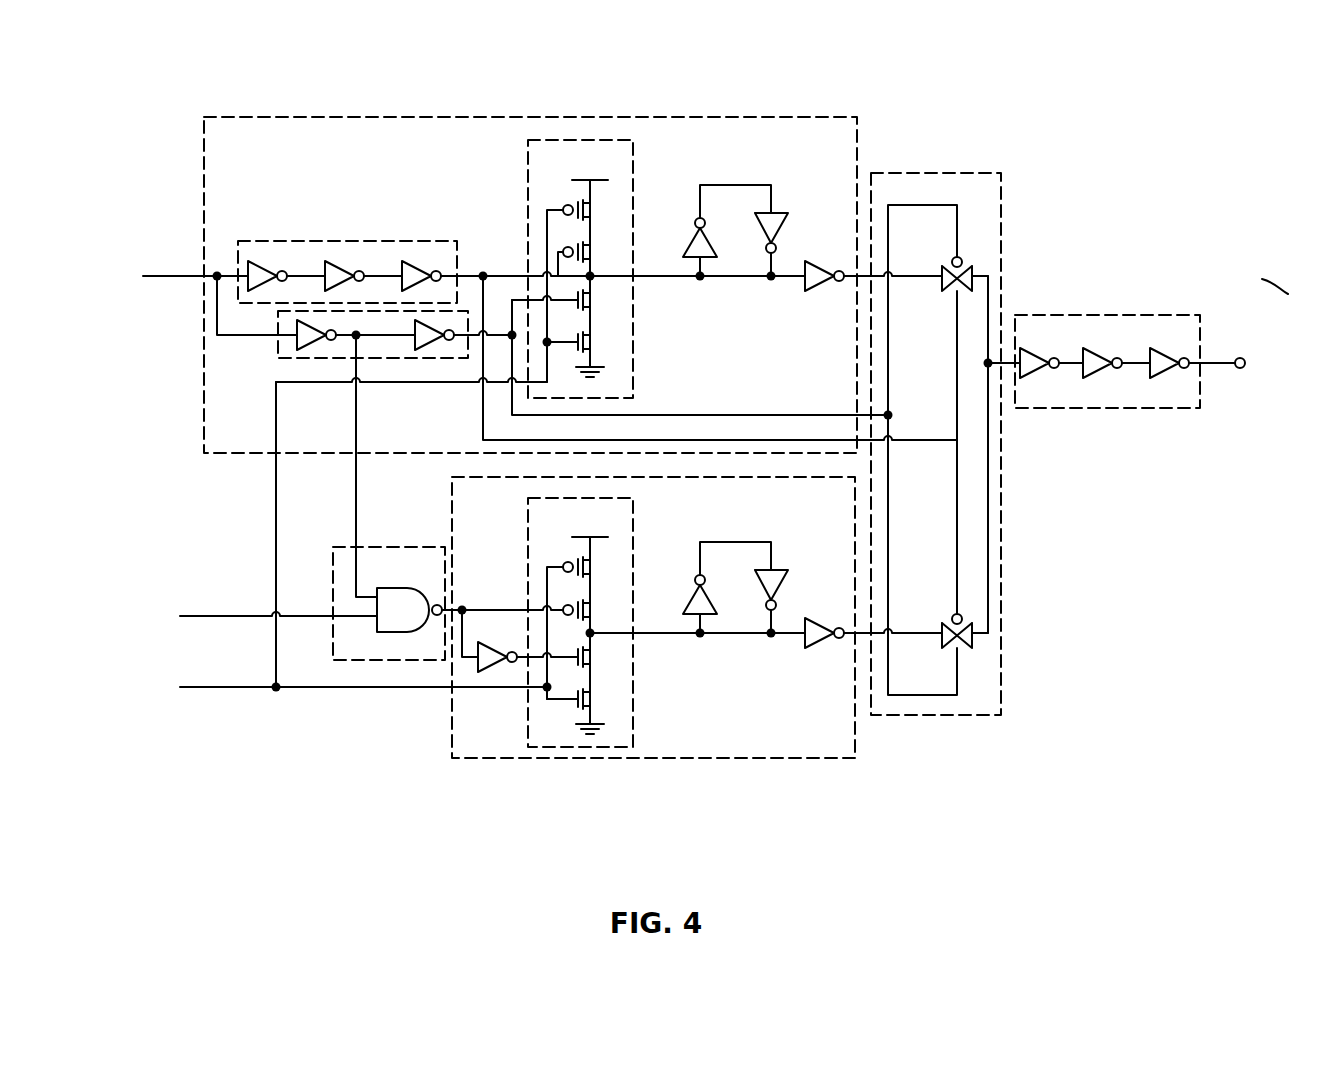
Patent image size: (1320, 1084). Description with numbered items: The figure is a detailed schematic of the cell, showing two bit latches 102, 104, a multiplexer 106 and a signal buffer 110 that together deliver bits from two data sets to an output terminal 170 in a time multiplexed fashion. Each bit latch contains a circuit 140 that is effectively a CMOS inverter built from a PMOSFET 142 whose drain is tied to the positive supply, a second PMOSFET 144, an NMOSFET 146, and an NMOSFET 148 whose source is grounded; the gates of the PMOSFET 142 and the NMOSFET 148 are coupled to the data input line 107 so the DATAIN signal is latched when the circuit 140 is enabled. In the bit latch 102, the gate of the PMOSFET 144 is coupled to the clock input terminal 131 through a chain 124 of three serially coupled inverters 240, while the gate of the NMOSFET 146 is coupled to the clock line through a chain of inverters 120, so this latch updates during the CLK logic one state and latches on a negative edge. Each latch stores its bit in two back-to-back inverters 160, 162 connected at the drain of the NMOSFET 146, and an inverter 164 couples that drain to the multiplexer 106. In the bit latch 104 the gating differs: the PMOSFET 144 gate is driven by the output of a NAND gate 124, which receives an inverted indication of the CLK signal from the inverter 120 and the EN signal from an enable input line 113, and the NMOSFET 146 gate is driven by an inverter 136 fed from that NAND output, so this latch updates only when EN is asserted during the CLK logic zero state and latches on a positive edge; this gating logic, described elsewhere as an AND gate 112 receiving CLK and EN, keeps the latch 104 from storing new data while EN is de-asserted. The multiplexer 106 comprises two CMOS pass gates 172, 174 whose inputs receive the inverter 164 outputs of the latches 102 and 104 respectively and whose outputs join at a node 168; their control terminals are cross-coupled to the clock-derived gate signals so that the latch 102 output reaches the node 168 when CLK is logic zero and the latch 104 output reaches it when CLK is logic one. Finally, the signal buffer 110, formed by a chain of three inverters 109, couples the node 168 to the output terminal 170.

The bit latch 102 is at (857, 143).
The bit latch 104 is at (857, 742).
The multiplexer 106 is at (1002, 522).
The data input line 107 is at (232, 688).
The inverter 109 is at (1040, 376).
The signal buffer 110 is at (1050, 315).
The AND gate 112 is at (333, 593).
The enable input line 113 is at (230, 615).
The inverter 120 is at (310, 350).
The chain of three serially coupled inverters / NAND gate 124 is at (372, 240).
The clock input terminal 131 is at (170, 285).
The inverter 136 is at (493, 672).
The circuit 140 is at (528, 190).
The PMOSFET 142 is at (592, 207).
The PMOSFET 144 is at (592, 251).
The NMOSFET 146 is at (592, 298).
The NMOSFET 148 is at (592, 341).
The inverter 160 is at (713, 223).
The inverter 162 is at (776, 213).
The inverter 164 is at (828, 292).
The node 168 is at (990, 360).
The output terminal 170 is at (1240, 370).
The CMOS pass gate 172 is at (960, 258).
The CMOS pass gate 174 is at (960, 648).
The inverter 240 is at (258, 261).